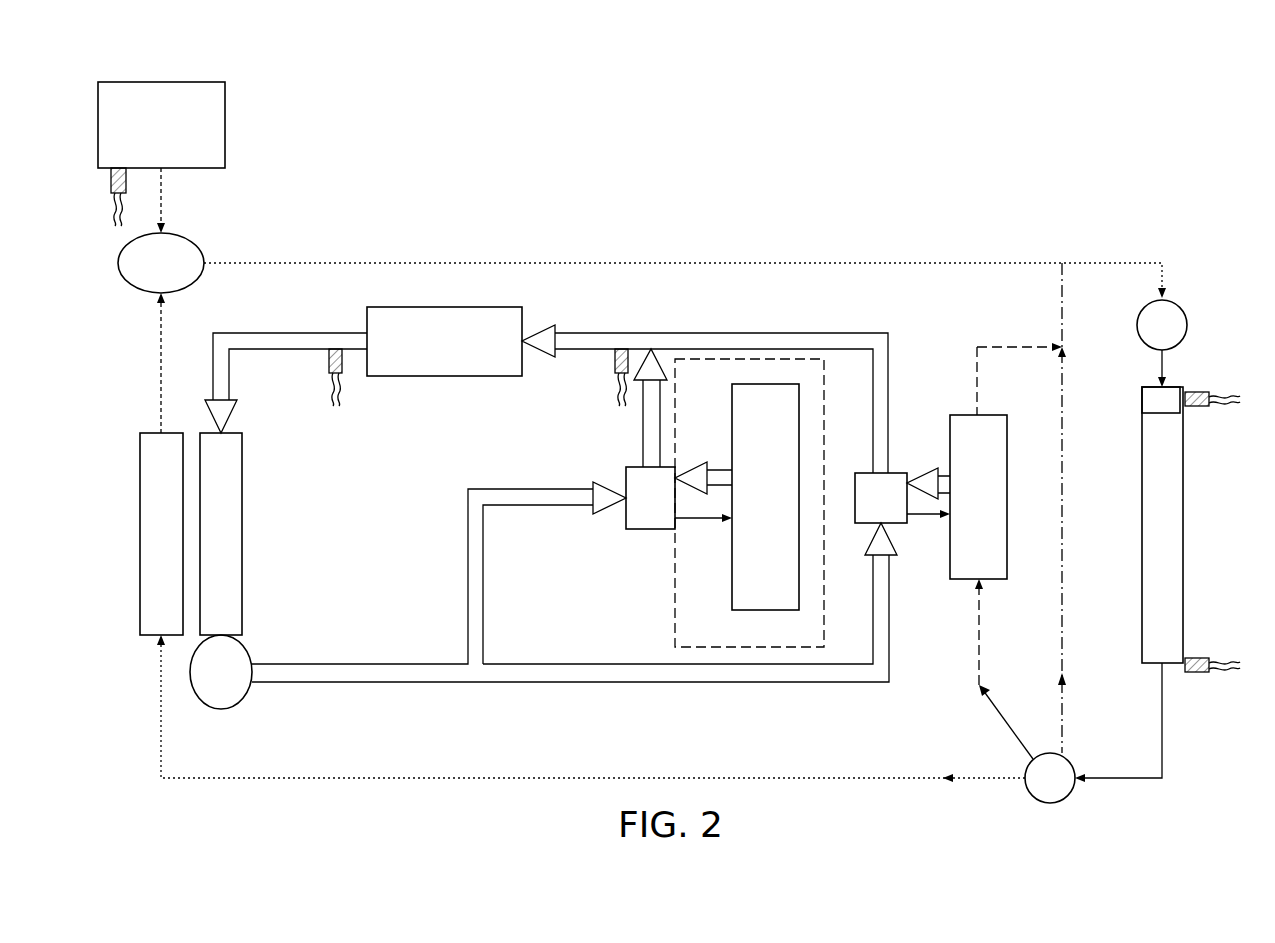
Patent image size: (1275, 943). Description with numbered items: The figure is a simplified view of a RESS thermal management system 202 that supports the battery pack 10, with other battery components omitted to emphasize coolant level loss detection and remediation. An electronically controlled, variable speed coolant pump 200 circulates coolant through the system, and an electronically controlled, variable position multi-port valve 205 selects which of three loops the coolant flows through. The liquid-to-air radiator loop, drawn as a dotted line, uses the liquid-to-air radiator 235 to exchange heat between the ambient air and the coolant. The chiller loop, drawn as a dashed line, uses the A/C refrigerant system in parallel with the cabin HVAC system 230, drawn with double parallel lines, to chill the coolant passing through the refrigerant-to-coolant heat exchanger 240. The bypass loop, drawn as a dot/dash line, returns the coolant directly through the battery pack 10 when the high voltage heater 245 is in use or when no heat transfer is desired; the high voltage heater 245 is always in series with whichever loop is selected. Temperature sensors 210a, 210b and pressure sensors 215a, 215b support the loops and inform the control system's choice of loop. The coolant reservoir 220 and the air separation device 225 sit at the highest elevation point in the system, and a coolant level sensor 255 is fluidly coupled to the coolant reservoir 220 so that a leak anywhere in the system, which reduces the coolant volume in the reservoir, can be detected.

The RESS thermal management system 202 is at (993, 155).
The coolant reservoir 220 is at (228, 124).
The coolant level sensor 255 is at (110, 180).
The air separation device 225 is at (202, 250).
The liquid-to-air radiator 235 is at (140, 506).
The cabin heating, ventilation and air conditioning (HVAC) system 230 is at (466, 690).
The pressure sensor 215a is at (328, 358).
The pressure sensor 215b is at (614, 358).
The refrigerant-to-coolant heat exchanger 240 is at (998, 415).
The coolant pump 200 is at (1188, 326).
The high voltage heater 245 is at (1142, 397).
The battery pack 10 is at (1183, 510).
The temperature sensor 210a is at (1200, 392).
The temperature sensor 210b is at (1200, 658).
The multi-port valve 205 is at (1071, 762).